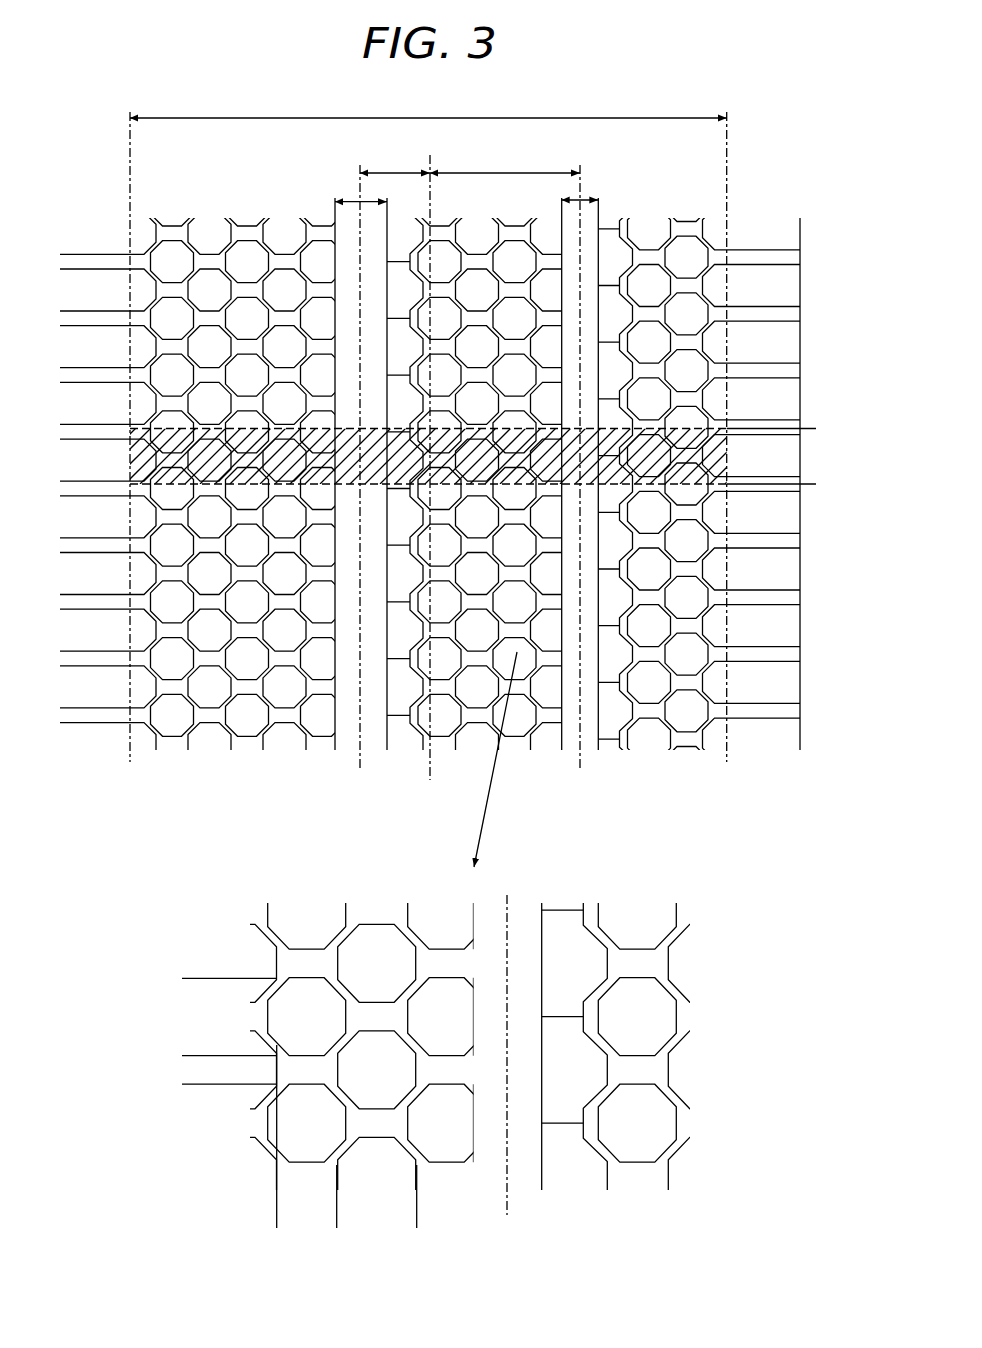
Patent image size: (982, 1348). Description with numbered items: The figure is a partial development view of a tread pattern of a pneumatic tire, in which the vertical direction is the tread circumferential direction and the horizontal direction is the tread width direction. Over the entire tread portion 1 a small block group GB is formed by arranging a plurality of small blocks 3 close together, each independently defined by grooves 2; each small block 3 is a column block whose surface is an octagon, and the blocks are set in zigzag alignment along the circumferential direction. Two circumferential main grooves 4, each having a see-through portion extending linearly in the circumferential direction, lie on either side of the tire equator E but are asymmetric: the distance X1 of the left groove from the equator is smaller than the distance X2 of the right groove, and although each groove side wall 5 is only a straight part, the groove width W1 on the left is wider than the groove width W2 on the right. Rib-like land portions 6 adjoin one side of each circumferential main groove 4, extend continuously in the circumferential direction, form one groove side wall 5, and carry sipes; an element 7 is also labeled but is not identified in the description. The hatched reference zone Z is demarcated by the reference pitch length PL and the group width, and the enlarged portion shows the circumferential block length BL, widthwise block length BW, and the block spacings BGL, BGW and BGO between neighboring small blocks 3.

The tread portion 1 is at (753, 192).
The grooves 2 is at (172, 682).
The small blocks 3 is at (248, 717).
The circumferential main grooves 4 is at (373, 723).
The groove side wall 5 is at (336, 712).
The rib-like land portions 6 is at (397, 697).
The narrow block 7 is at (397, 653).
The reference pitch length PL is at (810, 428).
The reference zone Z is at (730, 453).
The tire equator E is at (429, 142).
The distance of left circumferential main groove from equator X1 is at (395, 162).
The distance of right circumferential main groove from equator X2 is at (505, 162).
The groove width of left circumferential main groove W1 is at (342, 186).
The groove width of right circumferential main groove W2 is at (599, 186).
The small block group GB is at (290, 820).
The distance between small blocks BGO is at (345, 983).
The circumferential length of small block BL is at (190, 978).
The distance between small blocks BGL is at (190, 1056).
The distance between small blocks BGW is at (337, 1220).
The widthwise length of small block BW is at (417, 1220).